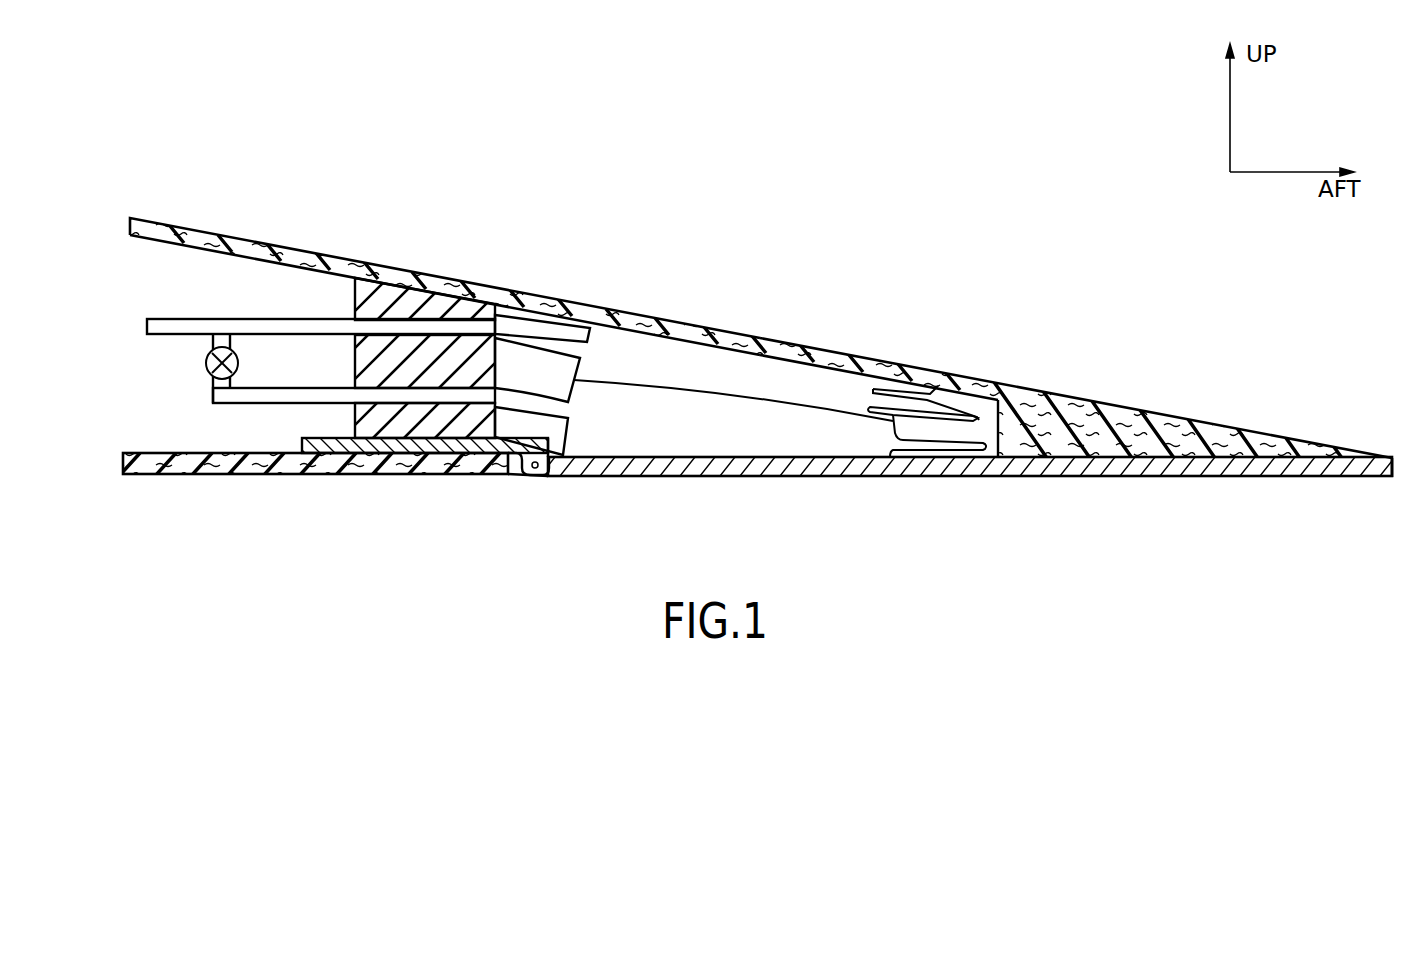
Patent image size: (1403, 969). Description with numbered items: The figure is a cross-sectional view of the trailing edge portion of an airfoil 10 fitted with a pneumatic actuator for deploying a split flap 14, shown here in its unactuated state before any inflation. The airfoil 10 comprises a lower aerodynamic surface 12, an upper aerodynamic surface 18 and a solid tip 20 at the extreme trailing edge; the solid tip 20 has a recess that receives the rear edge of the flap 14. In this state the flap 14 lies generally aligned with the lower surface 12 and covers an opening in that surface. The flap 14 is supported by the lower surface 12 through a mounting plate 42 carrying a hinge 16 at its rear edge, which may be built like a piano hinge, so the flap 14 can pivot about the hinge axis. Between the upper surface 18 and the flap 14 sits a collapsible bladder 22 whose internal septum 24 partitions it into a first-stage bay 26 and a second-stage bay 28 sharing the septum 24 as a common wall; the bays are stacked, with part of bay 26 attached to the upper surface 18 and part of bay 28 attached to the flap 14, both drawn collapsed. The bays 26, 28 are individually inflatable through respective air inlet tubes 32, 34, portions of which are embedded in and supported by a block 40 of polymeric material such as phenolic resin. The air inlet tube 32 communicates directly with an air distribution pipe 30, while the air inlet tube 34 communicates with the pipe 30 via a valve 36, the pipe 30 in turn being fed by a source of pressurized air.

The airfoil 10 is at (598, 252).
The lower aerodynamic surface 12 is at (325, 455).
The split flap 14 is at (775, 477).
The hinge 16 is at (529, 484).
The upper aerodynamic surface 18 is at (455, 272).
The solid tip 20 is at (1255, 430).
The collapsible bladder 22 is at (790, 343).
The septum 24 is at (681, 397).
The first-stage bay 26 is at (927, 400).
The second-stage bay 28 is at (955, 455).
The air distribution pipe 30 is at (245, 318).
The air inlet tube 32 is at (320, 318).
The air inlet tube 34 is at (250, 404).
The valve 36 is at (206, 368).
The block 40 is at (483, 297).
The mounting plate 42 is at (400, 443).